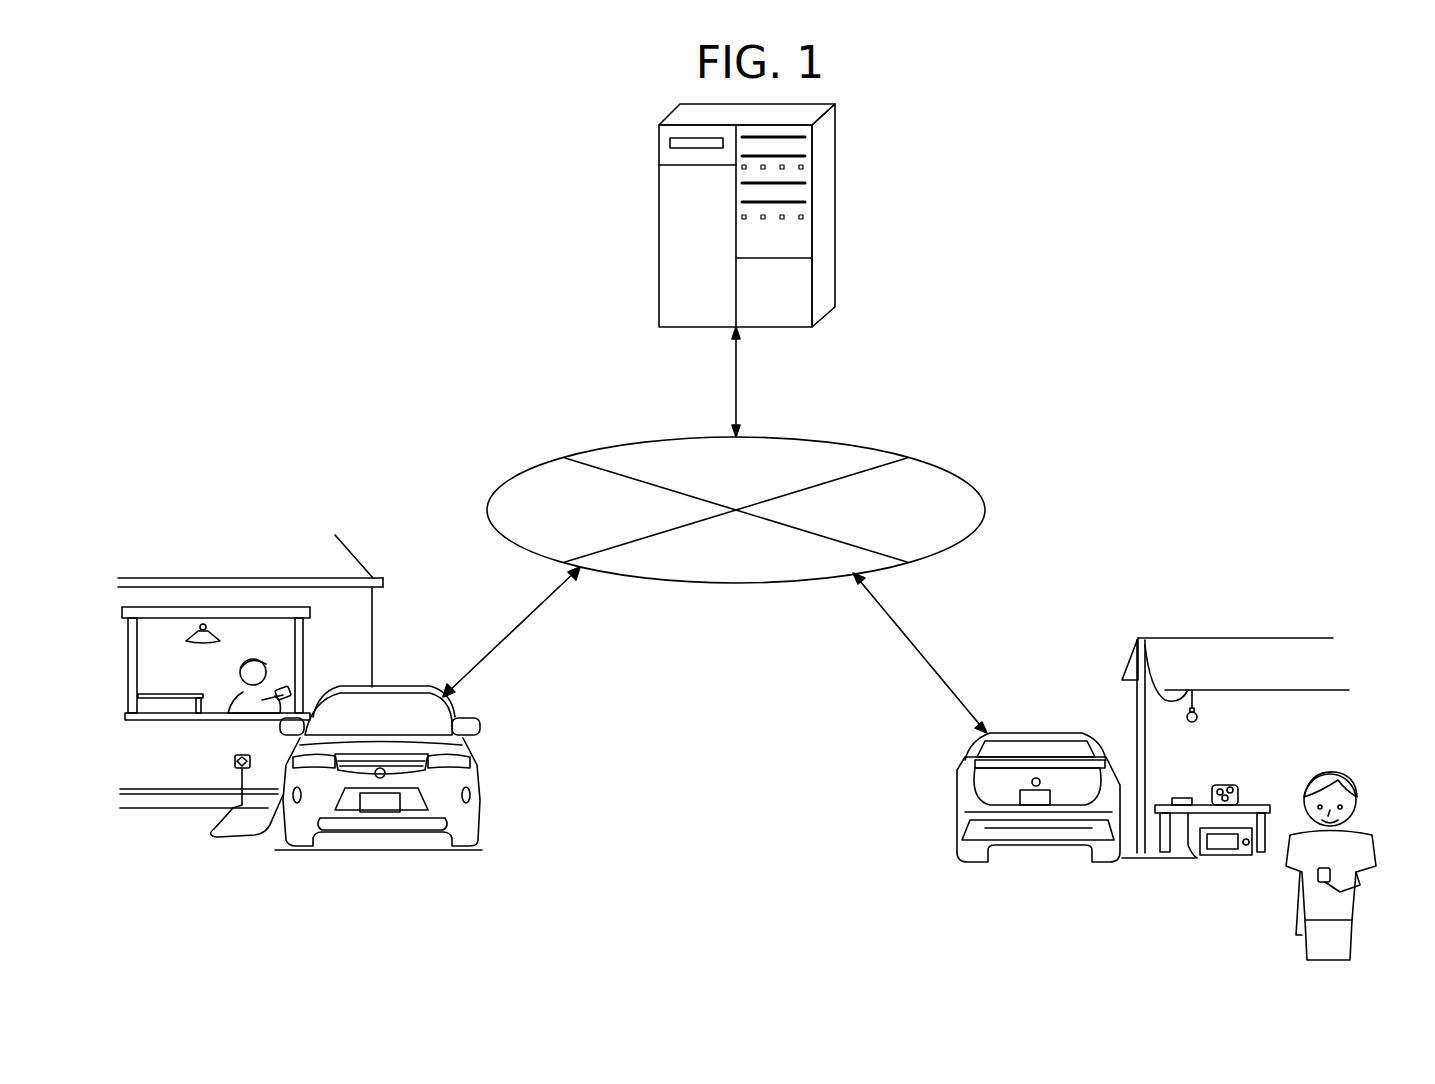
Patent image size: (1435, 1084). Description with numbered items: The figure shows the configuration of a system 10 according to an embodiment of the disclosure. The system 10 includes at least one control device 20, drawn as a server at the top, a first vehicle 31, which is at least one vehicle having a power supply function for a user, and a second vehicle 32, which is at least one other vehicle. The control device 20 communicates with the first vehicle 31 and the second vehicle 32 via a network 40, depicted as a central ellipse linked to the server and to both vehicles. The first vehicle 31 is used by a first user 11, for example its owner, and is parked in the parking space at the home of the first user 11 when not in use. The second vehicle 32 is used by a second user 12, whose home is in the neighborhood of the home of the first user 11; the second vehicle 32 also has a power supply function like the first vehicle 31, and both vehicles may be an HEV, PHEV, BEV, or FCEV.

The system 10 is at (1000, 141).
The first user 11 is at (237, 693).
The second user 12 is at (1352, 843).
The control device 20 is at (826, 218).
The first vehicle 31 is at (480, 787).
The second vehicle 32 is at (1013, 732).
The network 40 is at (953, 475).